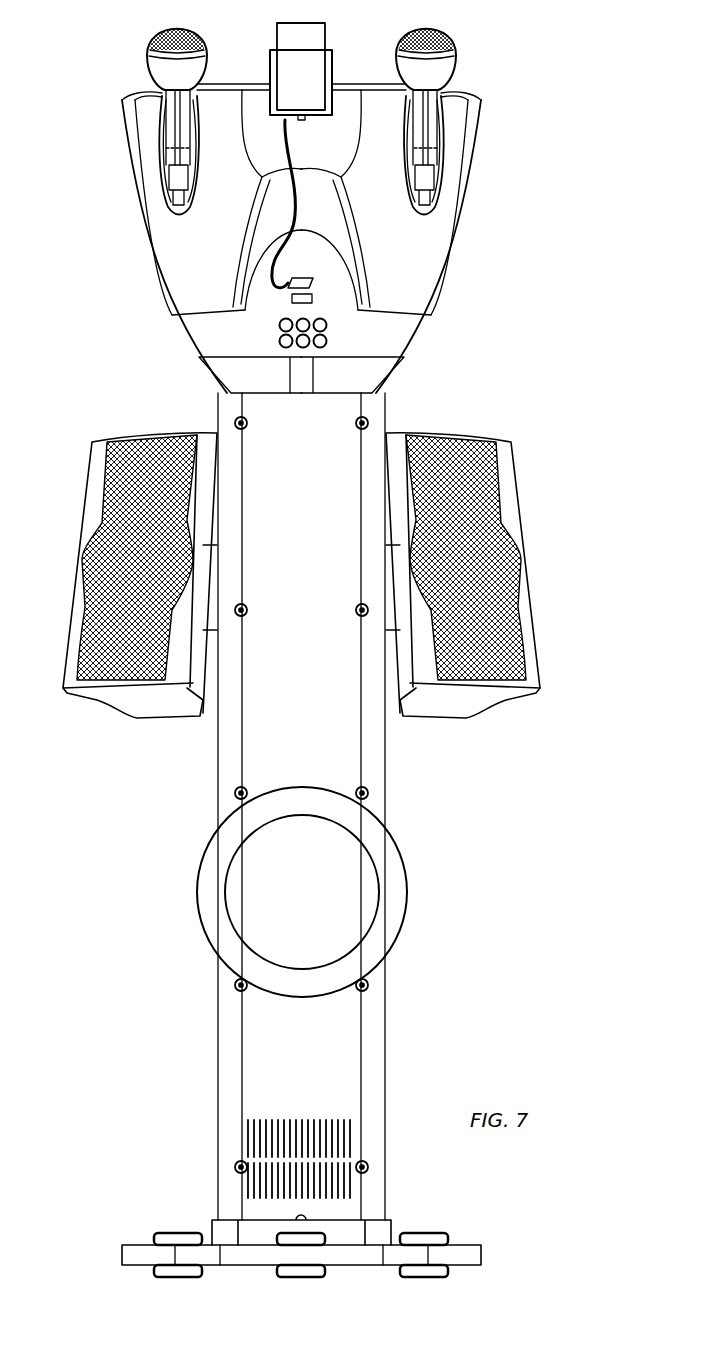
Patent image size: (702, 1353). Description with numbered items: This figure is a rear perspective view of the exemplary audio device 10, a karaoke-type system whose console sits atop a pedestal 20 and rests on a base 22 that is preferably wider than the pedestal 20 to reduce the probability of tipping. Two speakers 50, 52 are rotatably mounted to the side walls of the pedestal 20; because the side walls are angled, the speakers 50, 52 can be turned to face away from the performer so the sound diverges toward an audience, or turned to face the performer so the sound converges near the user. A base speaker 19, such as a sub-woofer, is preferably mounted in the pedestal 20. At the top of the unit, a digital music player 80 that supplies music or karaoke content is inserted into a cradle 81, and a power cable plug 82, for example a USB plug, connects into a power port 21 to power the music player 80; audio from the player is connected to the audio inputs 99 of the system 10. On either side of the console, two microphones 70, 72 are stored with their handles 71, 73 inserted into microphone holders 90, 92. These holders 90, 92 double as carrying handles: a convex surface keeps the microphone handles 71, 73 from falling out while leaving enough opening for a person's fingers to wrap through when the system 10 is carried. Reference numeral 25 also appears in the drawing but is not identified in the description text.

The audio device 10 is at (551, 189).
The base speaker 19 is at (360, 882).
The pedestal 20 is at (335, 1058).
The power port 21 is at (312, 292).
The base 22 is at (478, 1255).
The head housing 25 is at (462, 250).
The speaker 50 is at (137, 438).
The speaker 52 is at (462, 433).
The microphone 70 is at (150, 45).
The handle 71 is at (168, 118).
The microphone 72 is at (452, 33).
The handle 73 is at (432, 118).
The digital music player 80 is at (290, 42).
The cradle 81 is at (333, 60).
The power cable plug 82 is at (300, 276).
The microphone holder 90 is at (445, 155).
The microphone holder 92 is at (160, 150).
The audio inputs 99 is at (278, 331).